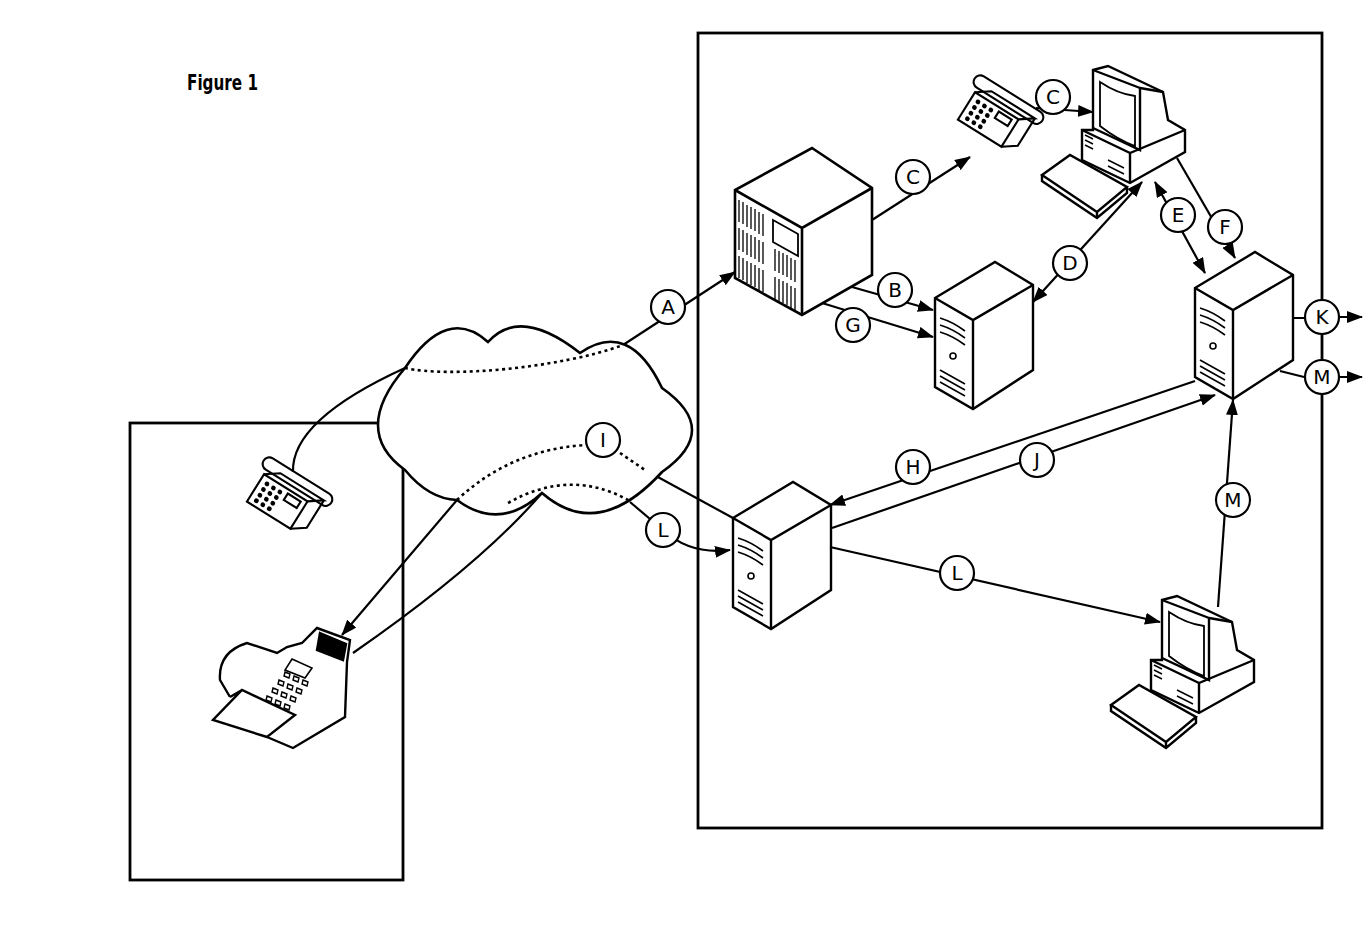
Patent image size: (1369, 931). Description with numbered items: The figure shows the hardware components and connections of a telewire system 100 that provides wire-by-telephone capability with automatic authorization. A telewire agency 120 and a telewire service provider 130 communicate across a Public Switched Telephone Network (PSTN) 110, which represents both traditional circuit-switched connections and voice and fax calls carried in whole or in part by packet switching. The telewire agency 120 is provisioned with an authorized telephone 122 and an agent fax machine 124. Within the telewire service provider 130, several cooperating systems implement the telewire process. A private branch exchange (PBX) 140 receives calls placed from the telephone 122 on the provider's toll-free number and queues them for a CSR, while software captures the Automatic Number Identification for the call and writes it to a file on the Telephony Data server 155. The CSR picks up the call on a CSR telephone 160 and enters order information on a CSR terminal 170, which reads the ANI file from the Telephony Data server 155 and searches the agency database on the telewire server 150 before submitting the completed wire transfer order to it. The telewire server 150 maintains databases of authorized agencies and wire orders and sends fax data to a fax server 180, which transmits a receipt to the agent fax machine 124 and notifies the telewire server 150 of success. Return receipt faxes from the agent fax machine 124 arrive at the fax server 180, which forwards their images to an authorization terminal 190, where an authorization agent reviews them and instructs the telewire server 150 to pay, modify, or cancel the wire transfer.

The telewire system 100 is at (443, 242).
The Public Switched Telephone Network (PSTN) 110 is at (550, 443).
The telewire agency 120 is at (283, 873).
The telephone 122 is at (258, 533).
The agent fax machine 124 is at (220, 728).
The telewire service provider 130 is at (1028, 819).
The private branch exchange (PBX) 140 is at (763, 296).
The telewire server 150 is at (1213, 397).
The Telephony Data server 155 is at (932, 367).
The CSR telephone 160 is at (967, 88).
The CSR terminal 170 is at (1172, 90).
The fax server 180 is at (813, 607).
The authorization terminal 190 is at (1150, 680).